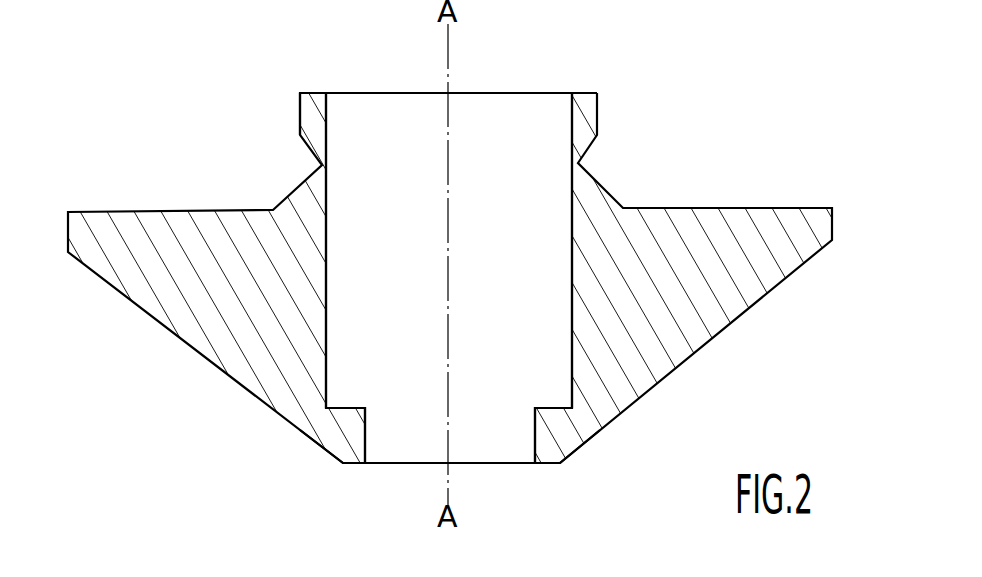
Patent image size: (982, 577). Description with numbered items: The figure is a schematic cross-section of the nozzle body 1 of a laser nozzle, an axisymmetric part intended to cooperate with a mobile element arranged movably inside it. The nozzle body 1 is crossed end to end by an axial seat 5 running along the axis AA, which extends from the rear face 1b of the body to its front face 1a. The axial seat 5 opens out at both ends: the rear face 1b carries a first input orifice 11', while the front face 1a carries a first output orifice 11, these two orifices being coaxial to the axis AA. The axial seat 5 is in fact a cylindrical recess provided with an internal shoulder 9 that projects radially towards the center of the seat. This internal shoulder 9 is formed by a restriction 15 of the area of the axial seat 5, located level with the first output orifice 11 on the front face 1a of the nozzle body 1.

The nozzle body 1 is at (698, 290).
The front face 1a is at (360, 478).
The rear face 1b is at (350, 90).
The axial seat 5 is at (482, 282).
The internal shoulder 9 is at (351, 400).
The first output orifice 11 is at (451, 501).
The first input orifice 11' is at (465, 57).
The restriction 15 is at (550, 421).